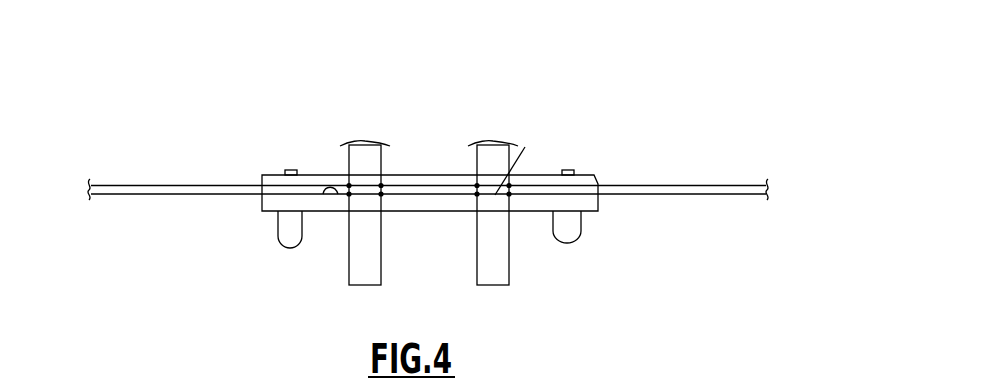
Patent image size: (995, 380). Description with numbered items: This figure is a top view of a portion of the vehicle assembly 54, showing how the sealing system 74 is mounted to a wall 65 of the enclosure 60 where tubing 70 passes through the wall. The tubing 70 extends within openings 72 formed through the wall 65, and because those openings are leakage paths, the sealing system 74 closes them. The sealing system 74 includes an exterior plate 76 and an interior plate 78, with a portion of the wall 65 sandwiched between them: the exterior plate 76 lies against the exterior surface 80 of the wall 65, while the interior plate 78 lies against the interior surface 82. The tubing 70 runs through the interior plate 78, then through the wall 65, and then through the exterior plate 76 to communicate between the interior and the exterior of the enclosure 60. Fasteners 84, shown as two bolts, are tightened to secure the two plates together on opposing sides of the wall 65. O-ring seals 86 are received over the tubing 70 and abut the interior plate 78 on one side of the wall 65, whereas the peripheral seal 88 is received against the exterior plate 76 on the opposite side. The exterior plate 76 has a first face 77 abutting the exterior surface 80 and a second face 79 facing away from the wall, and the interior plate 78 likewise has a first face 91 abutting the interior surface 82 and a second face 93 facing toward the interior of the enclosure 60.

The vehicle assembly 54 is at (601, 110).
The sealing system 74 is at (600, 155).
The fasteners 84 is at (289, 170).
The interior surface 82 is at (233, 185).
The openings 72 is at (349, 185).
The O-ring seals 86 is at (381, 185).
The interior plate 78 is at (438, 181).
The wall 65 is at (213, 195).
The exterior surface 80 is at (248, 196).
The second face 79 is at (318, 211).
The first face 77 is at (333, 197).
The tubing 70 is at (365, 275).
The peripheral seal 88 is at (478, 197).
The exterior plate 76 is at (415, 205).
The first face 91 is at (544, 196).
The second face 93 is at (537, 183).
The enclosure 60 is at (167, 212).